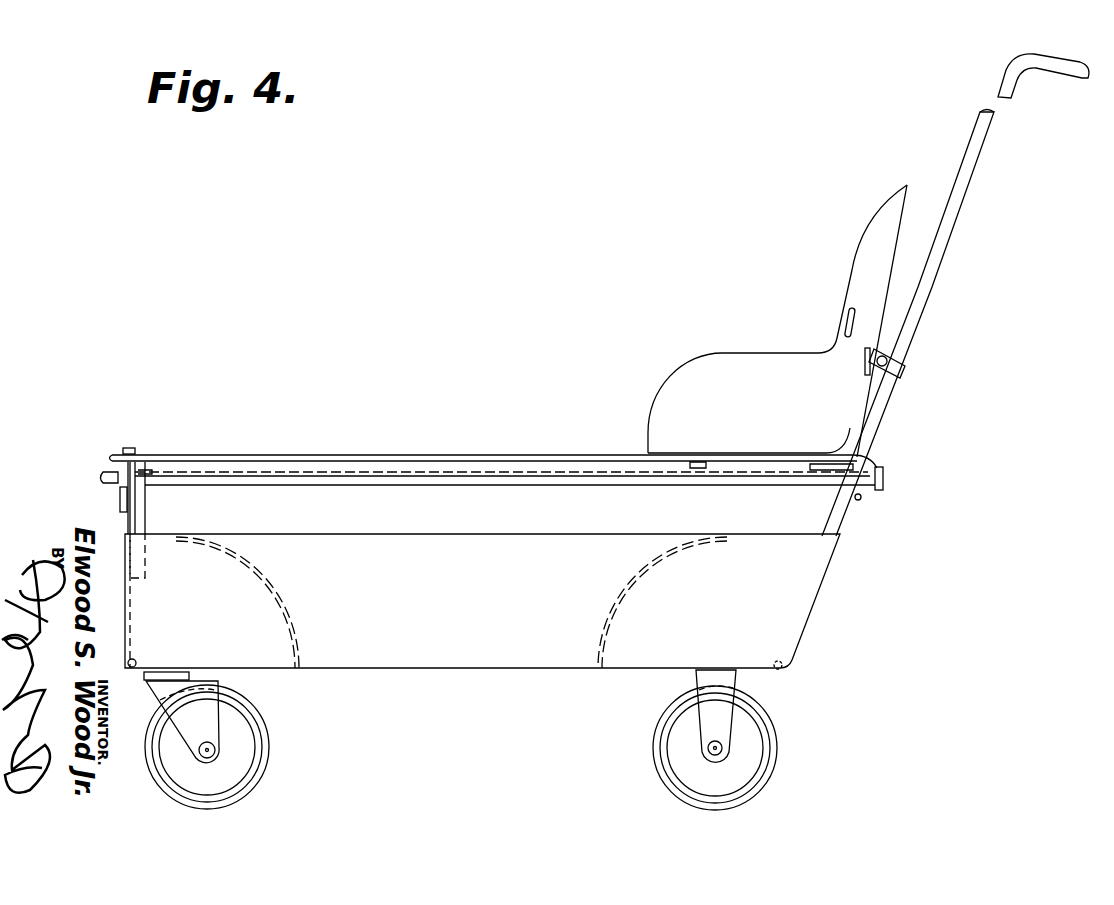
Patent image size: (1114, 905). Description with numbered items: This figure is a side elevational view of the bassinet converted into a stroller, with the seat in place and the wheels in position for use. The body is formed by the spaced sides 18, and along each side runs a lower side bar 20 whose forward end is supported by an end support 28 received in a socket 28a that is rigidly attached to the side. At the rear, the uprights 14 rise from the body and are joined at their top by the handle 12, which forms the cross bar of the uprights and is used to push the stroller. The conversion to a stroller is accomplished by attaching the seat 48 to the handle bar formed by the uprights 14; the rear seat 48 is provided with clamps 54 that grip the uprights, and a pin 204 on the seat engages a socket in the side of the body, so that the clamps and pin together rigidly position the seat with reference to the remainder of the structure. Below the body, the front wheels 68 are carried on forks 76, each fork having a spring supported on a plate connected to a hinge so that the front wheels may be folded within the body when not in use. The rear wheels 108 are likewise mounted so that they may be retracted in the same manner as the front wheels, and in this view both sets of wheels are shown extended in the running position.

The handle 12 is at (1087, 78).
The uprights 14 is at (950, 242).
The spaced sides 18 is at (463, 604).
The lower side bar 20 is at (583, 478).
The end supports 28 is at (268, 478).
The socket 28a is at (127, 518).
The seat 48 is at (760, 353).
The clamps 54 is at (893, 363).
The front wheels 68 is at (248, 722).
The fork 76 is at (181, 717).
The rear wheels 108 is at (750, 748).
The pin 204 is at (698, 455).